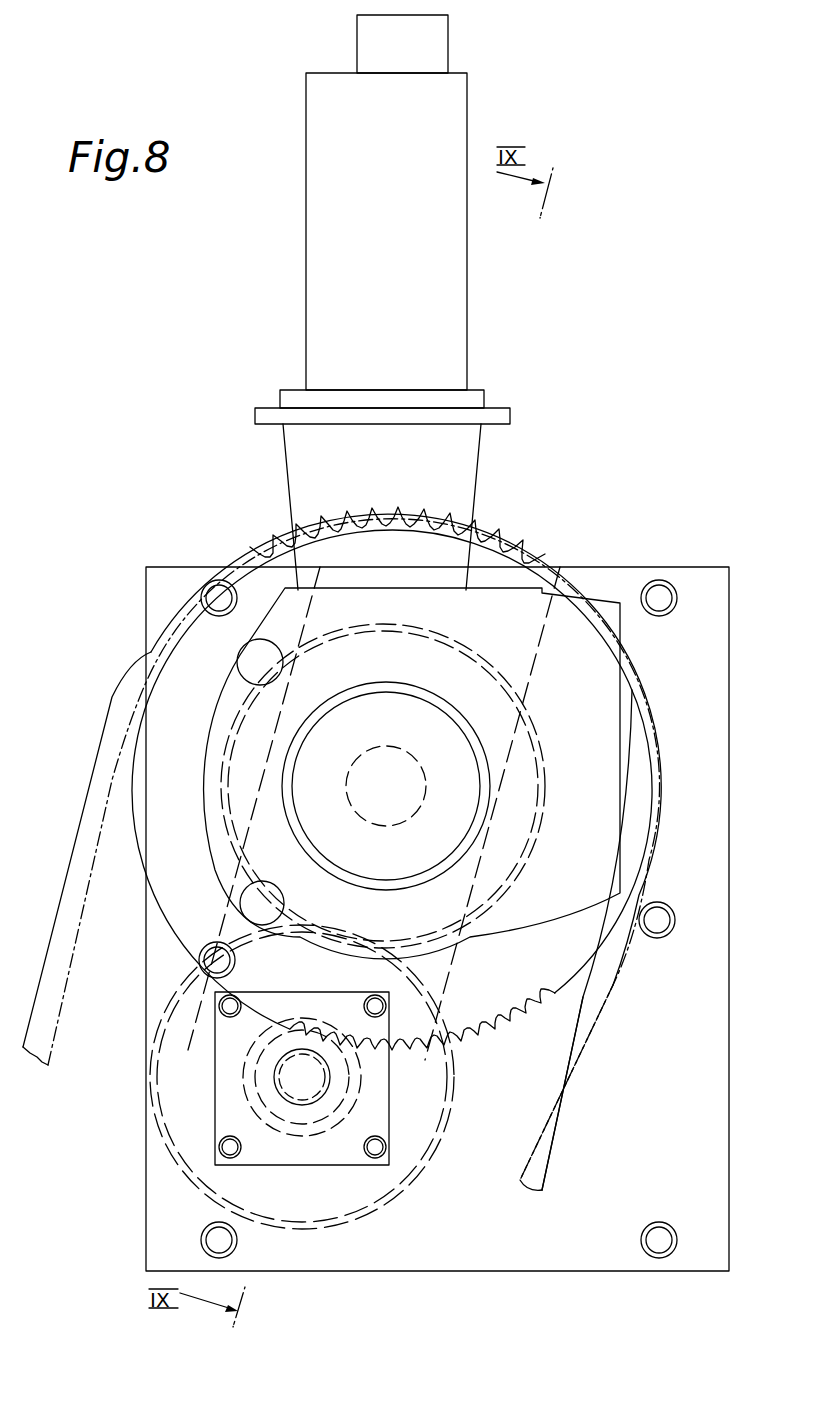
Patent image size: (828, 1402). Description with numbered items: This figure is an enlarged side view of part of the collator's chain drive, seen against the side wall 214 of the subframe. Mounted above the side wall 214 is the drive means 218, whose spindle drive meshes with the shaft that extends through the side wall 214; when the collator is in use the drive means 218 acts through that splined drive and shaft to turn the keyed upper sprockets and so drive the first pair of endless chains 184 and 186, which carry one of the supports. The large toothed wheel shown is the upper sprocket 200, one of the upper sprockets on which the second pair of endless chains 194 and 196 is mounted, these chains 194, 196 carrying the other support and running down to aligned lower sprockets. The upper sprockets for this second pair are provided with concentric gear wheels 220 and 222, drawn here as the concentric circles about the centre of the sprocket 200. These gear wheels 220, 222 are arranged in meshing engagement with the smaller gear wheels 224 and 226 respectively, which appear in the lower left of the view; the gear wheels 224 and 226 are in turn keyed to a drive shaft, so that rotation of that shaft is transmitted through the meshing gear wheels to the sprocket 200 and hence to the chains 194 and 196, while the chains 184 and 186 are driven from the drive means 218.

The drive means 218 is at (274, 310).
The upper sprocket 200 is at (268, 535).
The side wall 214 is at (704, 655).
The concentric gear wheel 220 is at (526, 724).
The concentric gear wheel 222 is at (411, 786).
The endless chain 184 is at (584, 1038).
The endless chain 186 is at (568, 1084).
The endless chain 194 is at (549, 1131).
The endless chain 196 is at (534, 1177).
The gear wheel 224 is at (178, 1127).
The gear wheel 226 is at (257, 1077).